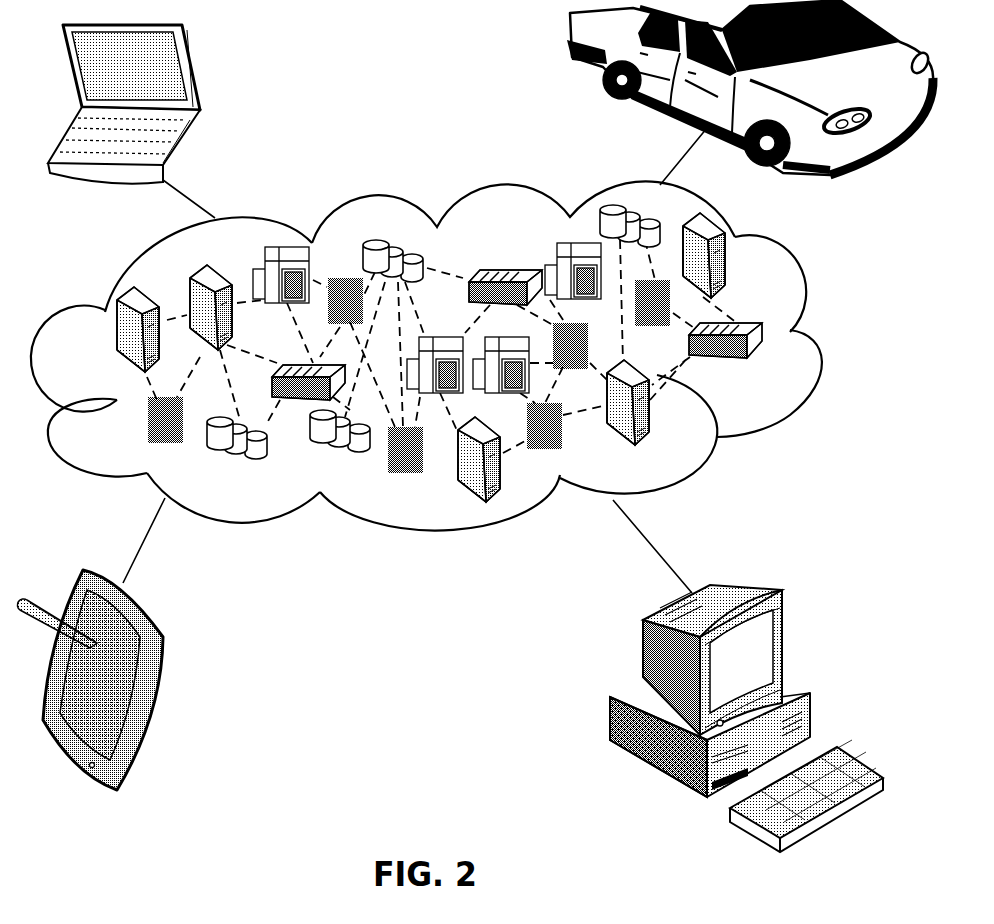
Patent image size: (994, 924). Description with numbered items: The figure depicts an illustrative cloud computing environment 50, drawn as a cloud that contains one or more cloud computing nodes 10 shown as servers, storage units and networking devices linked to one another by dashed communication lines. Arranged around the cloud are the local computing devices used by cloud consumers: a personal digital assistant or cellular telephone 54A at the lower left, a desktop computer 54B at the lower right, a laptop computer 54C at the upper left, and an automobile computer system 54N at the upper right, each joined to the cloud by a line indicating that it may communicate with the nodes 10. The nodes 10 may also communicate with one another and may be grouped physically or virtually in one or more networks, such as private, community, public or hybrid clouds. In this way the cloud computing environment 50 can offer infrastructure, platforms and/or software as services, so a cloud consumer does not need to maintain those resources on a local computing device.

The cloud computing environment 50 is at (820, 342).
The cloud computing nodes 10 is at (783, 375).
The personal digital assistant (PDA) or cellular telephone 54A is at (157, 668).
The desktop computer 54B is at (753, 580).
The laptop computer 54C is at (193, 72).
The automobile computer system 54N is at (572, 40).